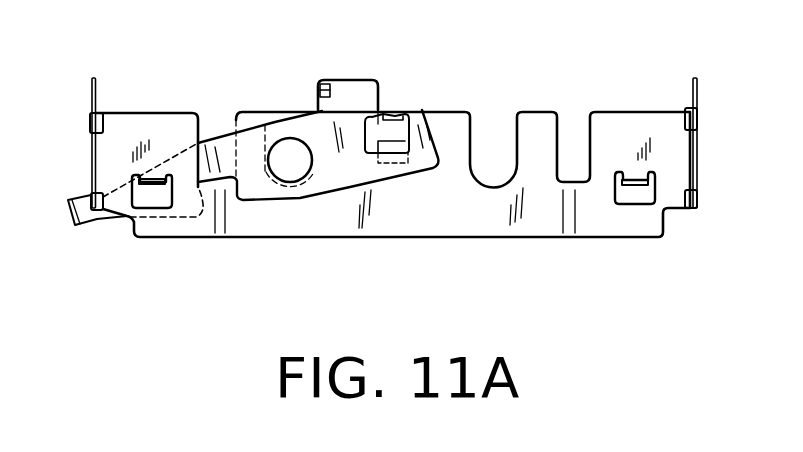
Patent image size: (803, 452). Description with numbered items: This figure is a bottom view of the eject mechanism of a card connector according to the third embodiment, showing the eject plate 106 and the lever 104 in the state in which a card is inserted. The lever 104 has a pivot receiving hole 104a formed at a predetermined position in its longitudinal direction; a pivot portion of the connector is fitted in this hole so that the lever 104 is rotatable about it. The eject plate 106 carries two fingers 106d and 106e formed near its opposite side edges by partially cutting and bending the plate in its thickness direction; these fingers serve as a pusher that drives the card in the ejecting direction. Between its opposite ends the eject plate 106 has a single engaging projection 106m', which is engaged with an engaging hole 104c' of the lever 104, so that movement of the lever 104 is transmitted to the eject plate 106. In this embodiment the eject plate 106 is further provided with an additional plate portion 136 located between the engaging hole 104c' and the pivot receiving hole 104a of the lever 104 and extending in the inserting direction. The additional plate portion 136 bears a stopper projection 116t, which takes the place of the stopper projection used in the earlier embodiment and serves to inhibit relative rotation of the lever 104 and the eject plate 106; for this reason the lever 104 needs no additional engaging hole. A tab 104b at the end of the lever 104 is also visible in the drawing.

The lever 104 is at (260, 108).
The pivot receiving hole 104a is at (290, 163).
The tab of first shell plate 104b is at (87, 228).
The engaging hole 104c' is at (434, 101).
The eject plate 106 is at (643, 110).
The finger 106d is at (152, 186).
The finger 106e is at (633, 187).
The engaging projection 106m' is at (406, 227).
The stopper projection 116t is at (325, 82).
The additional plate portion 136 is at (352, 91).